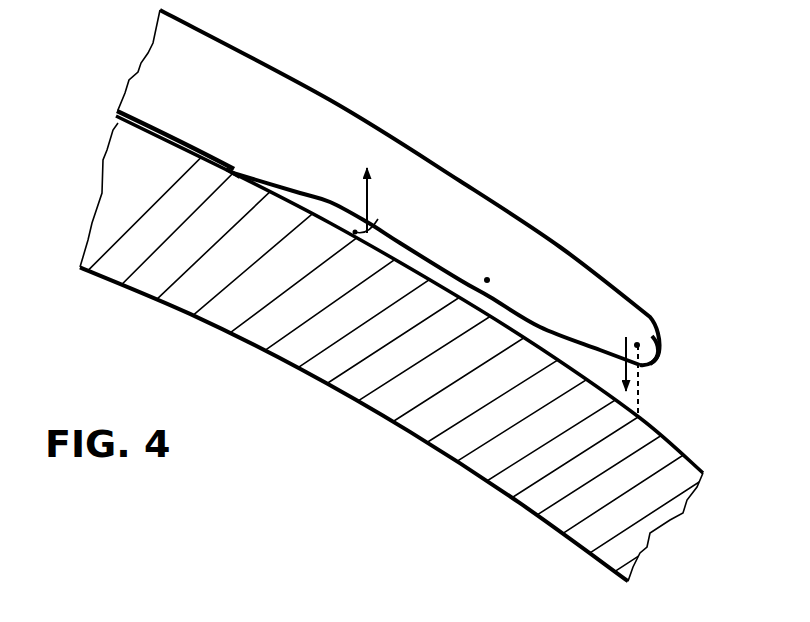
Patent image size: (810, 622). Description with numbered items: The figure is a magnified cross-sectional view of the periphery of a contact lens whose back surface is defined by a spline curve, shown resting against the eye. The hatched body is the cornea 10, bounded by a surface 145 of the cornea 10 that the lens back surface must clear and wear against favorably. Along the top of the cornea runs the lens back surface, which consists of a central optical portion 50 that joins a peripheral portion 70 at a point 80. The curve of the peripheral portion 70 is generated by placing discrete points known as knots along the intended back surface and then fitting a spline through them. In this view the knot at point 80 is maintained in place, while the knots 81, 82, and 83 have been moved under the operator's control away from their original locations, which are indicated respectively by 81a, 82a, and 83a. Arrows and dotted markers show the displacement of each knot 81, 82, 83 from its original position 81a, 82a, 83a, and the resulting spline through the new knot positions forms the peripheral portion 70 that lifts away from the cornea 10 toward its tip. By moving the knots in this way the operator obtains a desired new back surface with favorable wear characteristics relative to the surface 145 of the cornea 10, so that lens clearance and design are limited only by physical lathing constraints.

The cornea 10 is at (325, 335).
The central optical portion 50 is at (143, 114).
The peripheral portion 70 is at (569, 292).
The point 80 is at (229, 171).
The knot 81 is at (358, 216).
The original location of knot 81a is at (373, 226).
The knot 82 is at (503, 300).
The original location of knot 82a is at (487, 280).
The knot 83 is at (641, 366).
The original location of knot 83a is at (639, 340).
The surface of the cornea 145 is at (678, 453).